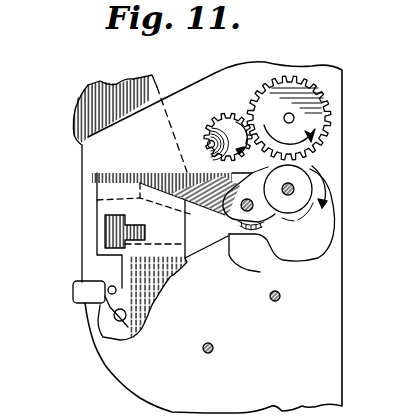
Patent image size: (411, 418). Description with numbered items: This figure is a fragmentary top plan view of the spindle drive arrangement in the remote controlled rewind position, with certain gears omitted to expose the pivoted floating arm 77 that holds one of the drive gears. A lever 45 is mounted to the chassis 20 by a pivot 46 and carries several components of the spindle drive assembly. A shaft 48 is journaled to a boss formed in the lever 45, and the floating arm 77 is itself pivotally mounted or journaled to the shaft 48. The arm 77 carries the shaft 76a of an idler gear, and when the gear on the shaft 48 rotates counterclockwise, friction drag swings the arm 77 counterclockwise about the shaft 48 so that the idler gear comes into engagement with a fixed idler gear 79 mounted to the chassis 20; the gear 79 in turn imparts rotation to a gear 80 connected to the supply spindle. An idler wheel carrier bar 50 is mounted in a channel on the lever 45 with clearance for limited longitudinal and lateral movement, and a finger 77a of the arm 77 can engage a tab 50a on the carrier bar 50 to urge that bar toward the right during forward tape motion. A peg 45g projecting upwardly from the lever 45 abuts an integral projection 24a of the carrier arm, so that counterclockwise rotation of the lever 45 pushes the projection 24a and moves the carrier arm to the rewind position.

The chassis 20 is at (303, 357).
The integral projection 24a is at (68, 276).
The lever 45 is at (92, 95).
The peg 45g is at (100, 325).
The pivot 46 is at (122, 321).
The shaft 48 is at (335, 237).
The idler wheel carrier bar 50 is at (105, 230).
The tab 50a is at (186, 306).
The shaft 76a is at (292, 187).
The floating arm 77 is at (302, 205).
The finger 77a is at (267, 262).
The fixed idler gear 79 is at (293, 97).
The gear 80 is at (221, 104).